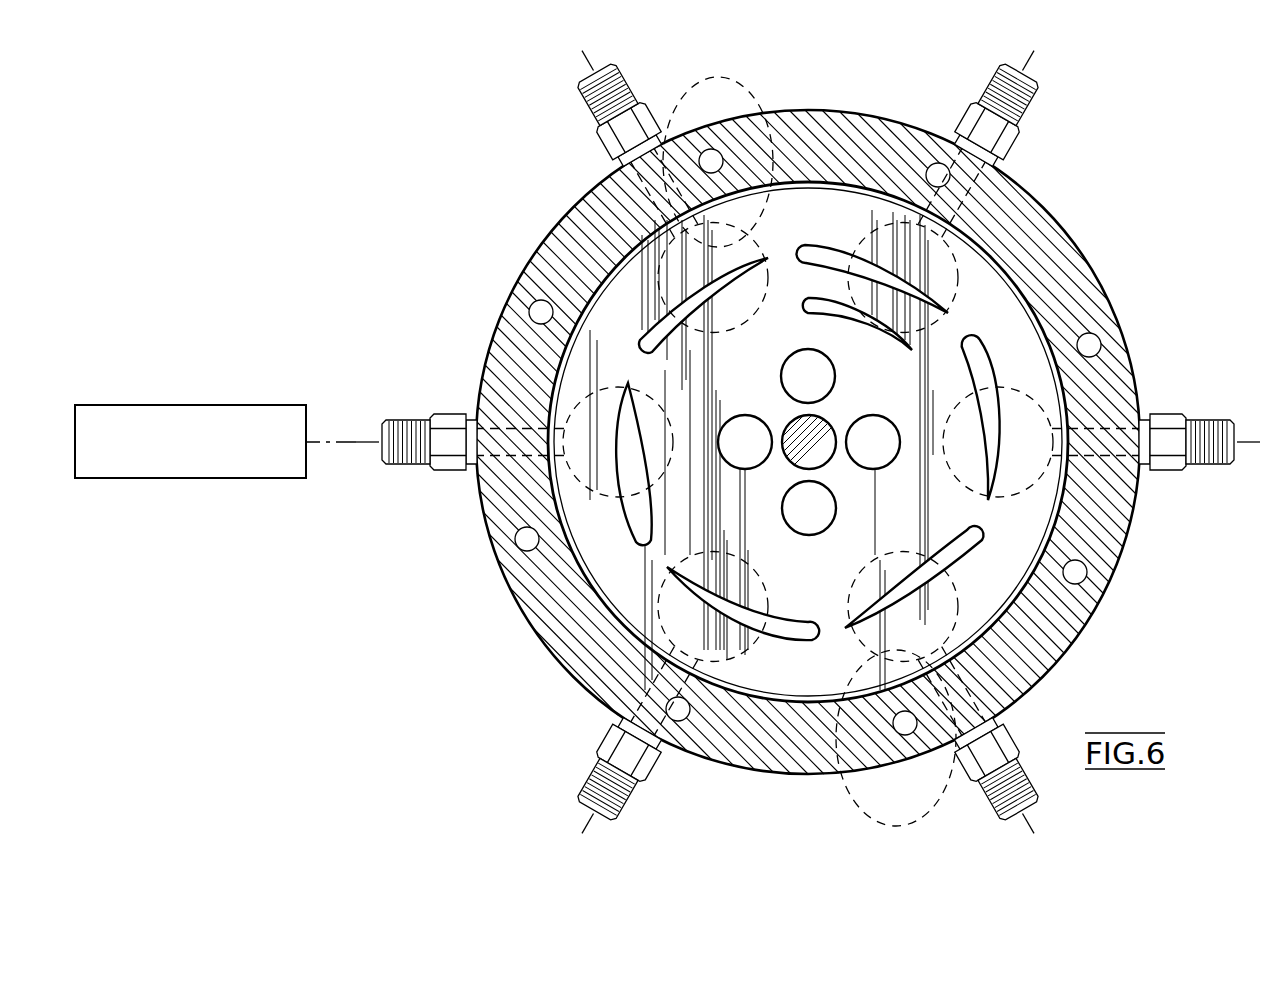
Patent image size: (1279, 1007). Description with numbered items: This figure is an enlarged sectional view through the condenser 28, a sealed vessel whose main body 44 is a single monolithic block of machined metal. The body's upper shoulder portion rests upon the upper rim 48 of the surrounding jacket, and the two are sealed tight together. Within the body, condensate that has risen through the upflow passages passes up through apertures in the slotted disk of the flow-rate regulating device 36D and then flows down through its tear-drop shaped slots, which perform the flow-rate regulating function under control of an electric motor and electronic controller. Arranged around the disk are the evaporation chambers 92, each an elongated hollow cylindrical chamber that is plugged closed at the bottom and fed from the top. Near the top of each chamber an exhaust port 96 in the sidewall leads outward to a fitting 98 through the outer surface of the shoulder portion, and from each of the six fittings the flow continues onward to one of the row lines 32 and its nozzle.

The condenser 28 is at (1095, 195).
The row lines 32 is at (153, 405).
The flow-rate regulating device 36D is at (1005, 332).
The main body 44 is at (598, 235).
The upper rim 48 is at (553, 285).
The evaporation chambers 92 is at (762, 110).
The exhaust port 96 is at (944, 792).
The fitting 98 is at (638, 112).